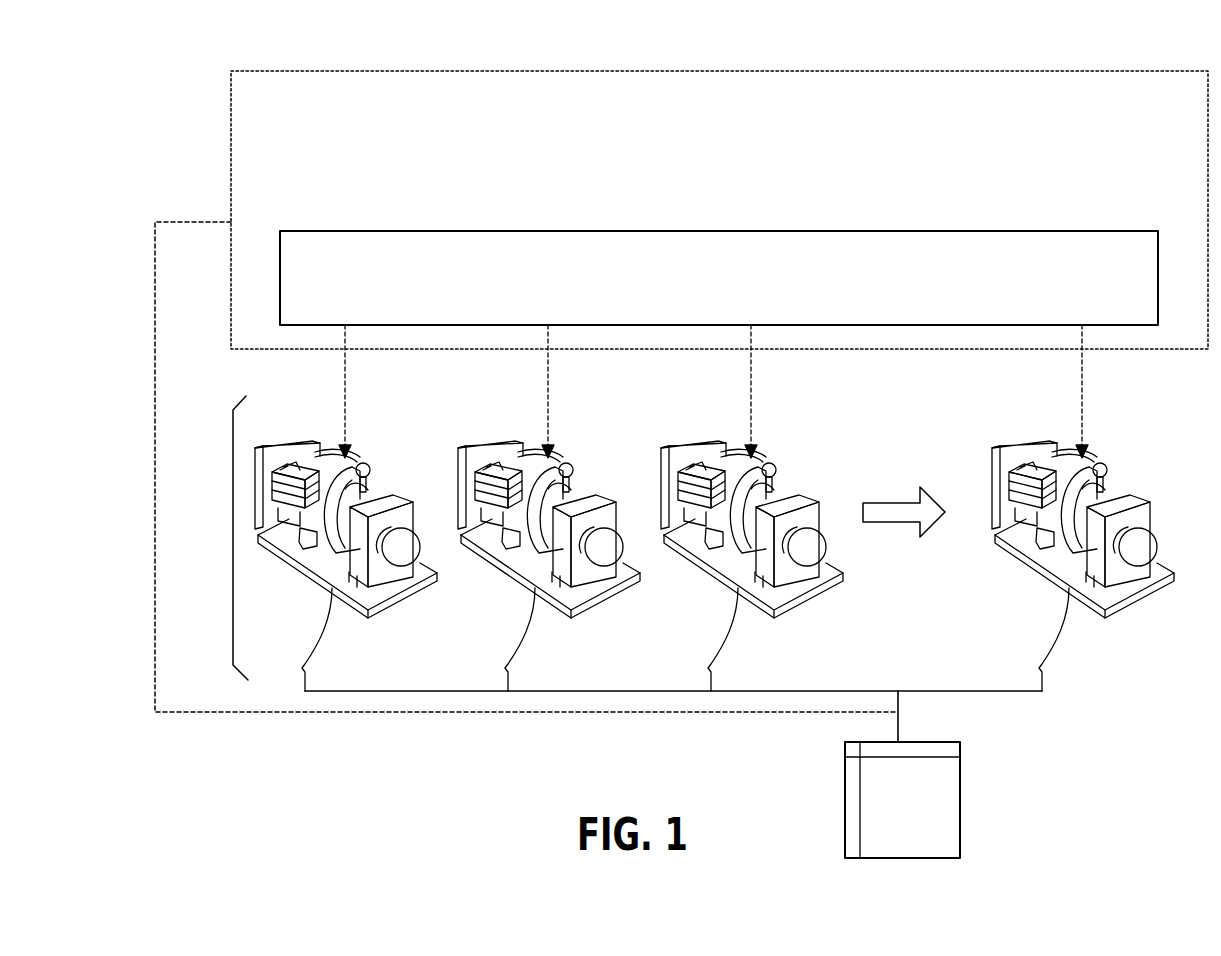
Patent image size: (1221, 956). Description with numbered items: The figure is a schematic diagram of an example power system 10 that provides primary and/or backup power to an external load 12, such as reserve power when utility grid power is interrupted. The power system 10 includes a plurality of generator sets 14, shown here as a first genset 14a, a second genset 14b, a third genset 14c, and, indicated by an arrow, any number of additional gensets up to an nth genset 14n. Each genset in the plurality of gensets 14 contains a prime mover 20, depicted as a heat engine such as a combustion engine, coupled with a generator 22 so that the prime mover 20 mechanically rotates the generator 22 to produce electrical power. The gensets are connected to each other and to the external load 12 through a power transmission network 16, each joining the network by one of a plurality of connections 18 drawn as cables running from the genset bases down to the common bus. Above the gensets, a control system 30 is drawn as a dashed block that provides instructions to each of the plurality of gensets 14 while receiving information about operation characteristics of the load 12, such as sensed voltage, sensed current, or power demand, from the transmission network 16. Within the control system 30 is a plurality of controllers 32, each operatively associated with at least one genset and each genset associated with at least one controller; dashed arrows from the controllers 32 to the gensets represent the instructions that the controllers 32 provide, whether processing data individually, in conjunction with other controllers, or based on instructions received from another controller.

The power system 10 is at (127, 567).
The external load 12 is at (962, 800).
The plurality of generator sets 14 is at (233, 528).
The first genset 14a is at (405, 598).
The second genset 14b is at (608, 598).
The third genset 14c is at (811, 598).
The nth genset 14n is at (1142, 598).
The power transmission network 16 is at (1027, 692).
The plurality of connections 18 is at (308, 679).
The prime mover 20 is at (353, 463).
The generator 22 is at (400, 546).
The control system 30 is at (836, 71).
The plurality of controllers 32 is at (897, 232).